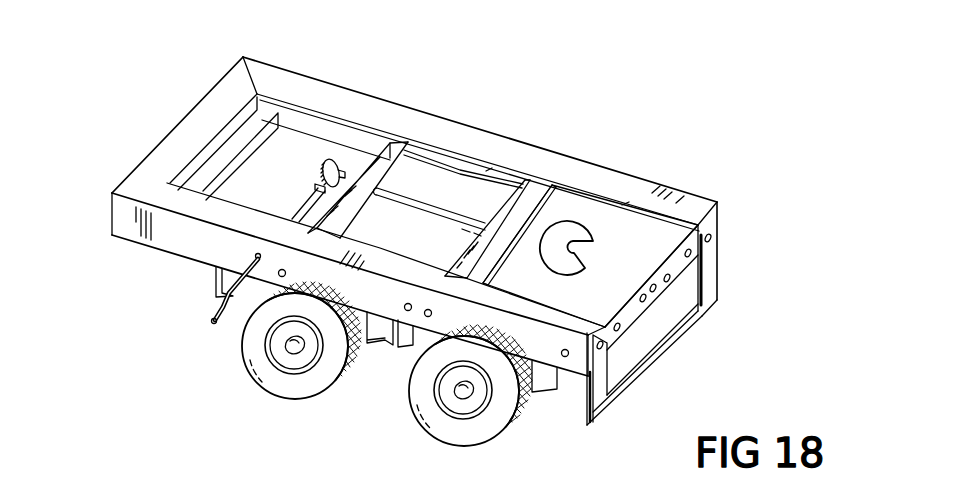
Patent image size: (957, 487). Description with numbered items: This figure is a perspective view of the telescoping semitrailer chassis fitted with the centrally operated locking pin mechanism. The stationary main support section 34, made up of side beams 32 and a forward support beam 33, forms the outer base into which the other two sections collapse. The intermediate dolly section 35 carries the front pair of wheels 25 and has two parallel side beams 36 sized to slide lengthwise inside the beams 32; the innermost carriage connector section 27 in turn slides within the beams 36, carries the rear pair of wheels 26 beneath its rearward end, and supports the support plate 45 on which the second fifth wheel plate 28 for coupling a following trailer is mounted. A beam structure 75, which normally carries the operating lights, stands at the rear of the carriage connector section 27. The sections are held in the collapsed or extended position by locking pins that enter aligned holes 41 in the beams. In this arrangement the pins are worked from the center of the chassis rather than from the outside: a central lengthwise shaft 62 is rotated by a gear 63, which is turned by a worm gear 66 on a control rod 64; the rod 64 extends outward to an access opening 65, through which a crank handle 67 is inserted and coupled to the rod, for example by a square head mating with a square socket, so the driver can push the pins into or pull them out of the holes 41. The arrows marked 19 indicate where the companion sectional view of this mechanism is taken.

The section line 19- 19 is at (573, 148).
The front pair of wheels 25 is at (262, 372).
The rear pair of wheels 26 is at (485, 427).
The carriage connector section 27 is at (649, 311).
The second fifth wheel plate 28 is at (595, 238).
The side beams of main support section 32 is at (633, 182).
The forward support beam 33 is at (204, 97).
The main support section 34 is at (352, 89).
The intermediate dolly section 35 is at (403, 163).
The side beams of dolly section 36 is at (463, 171).
The holes 41 is at (286, 269).
The support plate 45 is at (624, 293).
The shaft 62 is at (442, 214).
The gear 63 is at (327, 164).
The control rod 64 is at (305, 204).
The access opening 65 is at (256, 253).
The worm gear 66 is at (319, 188).
The crank handle 67 is at (212, 320).
The beam structure 75 is at (710, 308).